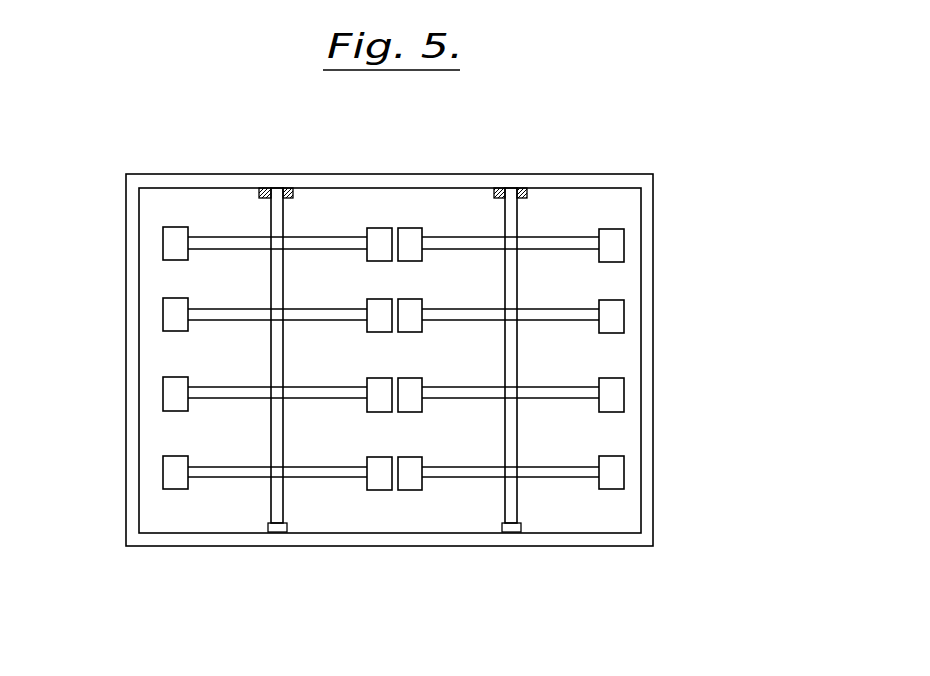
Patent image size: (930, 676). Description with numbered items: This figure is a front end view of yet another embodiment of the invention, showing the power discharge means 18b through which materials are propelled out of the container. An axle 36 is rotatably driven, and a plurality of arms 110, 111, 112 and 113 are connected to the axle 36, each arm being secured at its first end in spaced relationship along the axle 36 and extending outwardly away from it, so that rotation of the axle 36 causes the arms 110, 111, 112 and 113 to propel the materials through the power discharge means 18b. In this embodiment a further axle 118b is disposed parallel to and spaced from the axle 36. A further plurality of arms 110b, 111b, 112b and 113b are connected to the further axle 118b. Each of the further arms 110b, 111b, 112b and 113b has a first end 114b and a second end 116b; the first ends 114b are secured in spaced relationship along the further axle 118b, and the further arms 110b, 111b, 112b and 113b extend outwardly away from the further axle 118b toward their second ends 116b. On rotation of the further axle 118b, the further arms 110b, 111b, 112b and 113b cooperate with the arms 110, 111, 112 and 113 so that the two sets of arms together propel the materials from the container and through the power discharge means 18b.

The power discharge means 18b is at (273, 563).
The axle 36 is at (277, 342).
The arm 110 is at (227, 242).
The arm 111 is at (223, 313).
The arm 112 is at (235, 392).
The arm 113 is at (220, 477).
The further arm 110b is at (553, 241).
The further arm 111b is at (553, 308).
The further arm 112b is at (562, 397).
The further arm 113b is at (557, 477).
The first end 114b is at (522, 475).
The second end 116b is at (593, 473).
The further axle 118b is at (512, 215).